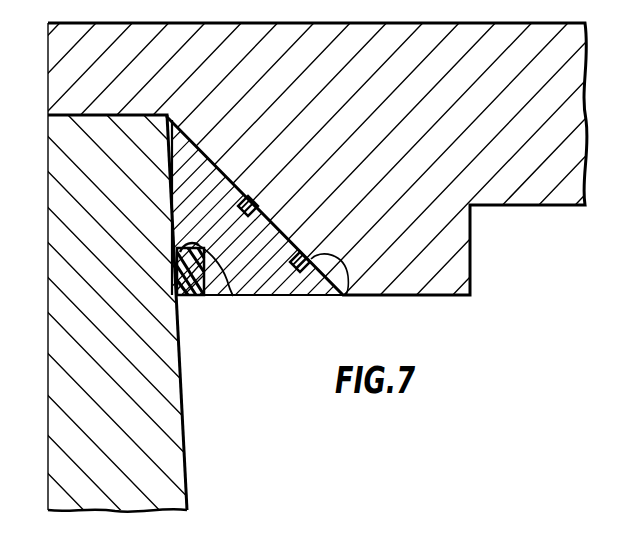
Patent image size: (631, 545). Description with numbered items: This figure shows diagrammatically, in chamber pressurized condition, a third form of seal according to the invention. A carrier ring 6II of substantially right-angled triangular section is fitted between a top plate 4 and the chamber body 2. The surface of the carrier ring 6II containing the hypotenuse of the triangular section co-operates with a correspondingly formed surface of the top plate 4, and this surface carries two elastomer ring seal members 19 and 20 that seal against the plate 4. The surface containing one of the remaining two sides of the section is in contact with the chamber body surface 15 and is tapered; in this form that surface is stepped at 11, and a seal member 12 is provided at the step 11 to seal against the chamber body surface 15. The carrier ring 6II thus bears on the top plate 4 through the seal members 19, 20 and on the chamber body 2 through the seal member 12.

The first body part 2 is at (122, 442).
The top plate 4 is at (372, 117).
The carrier ring 6II is at (250, 262).
The step 11 is at (231, 298).
The seal member 12 is at (185, 297).
The chamber body surface 15 is at (180, 388).
The elastomer ring seal member 19 is at (254, 201).
The elastomer ring seal member 20 is at (346, 291).